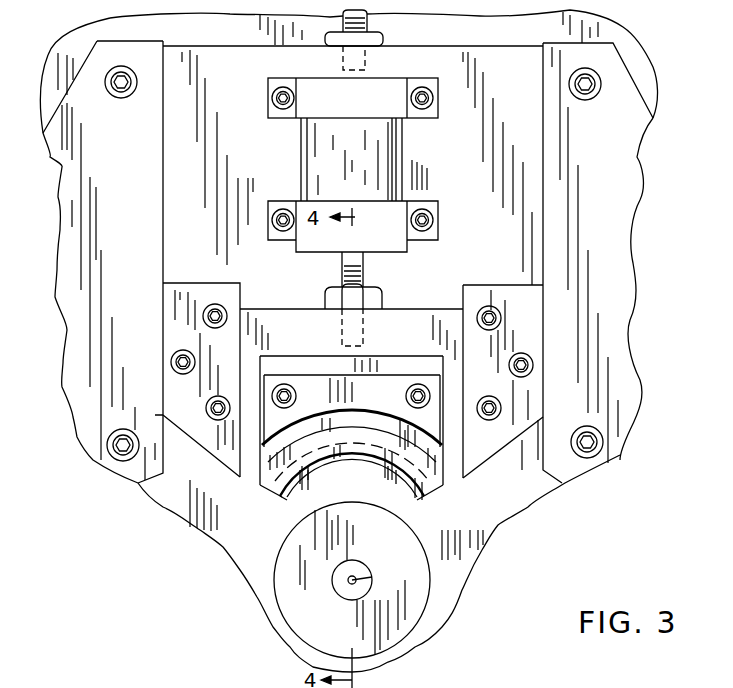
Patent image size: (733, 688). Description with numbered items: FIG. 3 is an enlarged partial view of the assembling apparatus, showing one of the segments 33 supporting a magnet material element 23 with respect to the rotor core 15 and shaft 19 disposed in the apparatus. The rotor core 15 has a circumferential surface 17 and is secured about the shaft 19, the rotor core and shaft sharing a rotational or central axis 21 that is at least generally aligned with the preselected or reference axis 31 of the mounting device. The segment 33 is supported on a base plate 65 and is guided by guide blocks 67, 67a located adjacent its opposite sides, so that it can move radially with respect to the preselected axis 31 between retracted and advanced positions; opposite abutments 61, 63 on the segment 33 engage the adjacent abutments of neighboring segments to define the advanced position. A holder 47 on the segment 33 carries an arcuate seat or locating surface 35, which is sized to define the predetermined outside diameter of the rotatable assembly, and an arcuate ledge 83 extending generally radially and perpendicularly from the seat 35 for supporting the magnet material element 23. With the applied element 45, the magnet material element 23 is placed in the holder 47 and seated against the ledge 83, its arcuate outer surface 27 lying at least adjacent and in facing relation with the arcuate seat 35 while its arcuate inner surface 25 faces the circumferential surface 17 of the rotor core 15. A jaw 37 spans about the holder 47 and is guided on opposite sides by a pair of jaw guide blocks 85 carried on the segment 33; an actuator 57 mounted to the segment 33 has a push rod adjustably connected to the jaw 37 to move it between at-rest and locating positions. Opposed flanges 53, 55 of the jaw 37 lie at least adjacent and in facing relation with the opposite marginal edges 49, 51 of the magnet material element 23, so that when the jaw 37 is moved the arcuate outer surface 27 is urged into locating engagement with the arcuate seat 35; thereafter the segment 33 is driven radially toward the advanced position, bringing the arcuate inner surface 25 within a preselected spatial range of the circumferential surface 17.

The rotor core 15 is at (313, 613).
The circumferential surface 17 is at (425, 613).
The shaft 19 is at (335, 582).
The rotational axis 21 is at (372, 577).
The preselected axis 31 is at (352, 580).
The magnet material element 23 is at (367, 428).
The arcuate inner surface 25 is at (297, 482).
The arcuate outer surface 27 is at (312, 417).
The segment 33 is at (489, 40).
The arcuate seat 35 is at (368, 432).
The jaw 37 is at (412, 302).
The applied element 45 is at (293, 500).
The holder 47 is at (323, 390).
The marginal edge 49 is at (428, 493).
The marginal edge 51 is at (277, 498).
The flange 53 is at (262, 492).
The flange 55 is at (435, 492).
The actuator 57 is at (401, 150).
The abutment 61 is at (190, 437).
The abutment 63 is at (508, 440).
The base plate 65 is at (633, 45).
The guide block 67 is at (75, 190).
The guide block 67a is at (623, 190).
The arcuate ledge 83 is at (378, 468).
The jaw guide block 85 is at (193, 290).